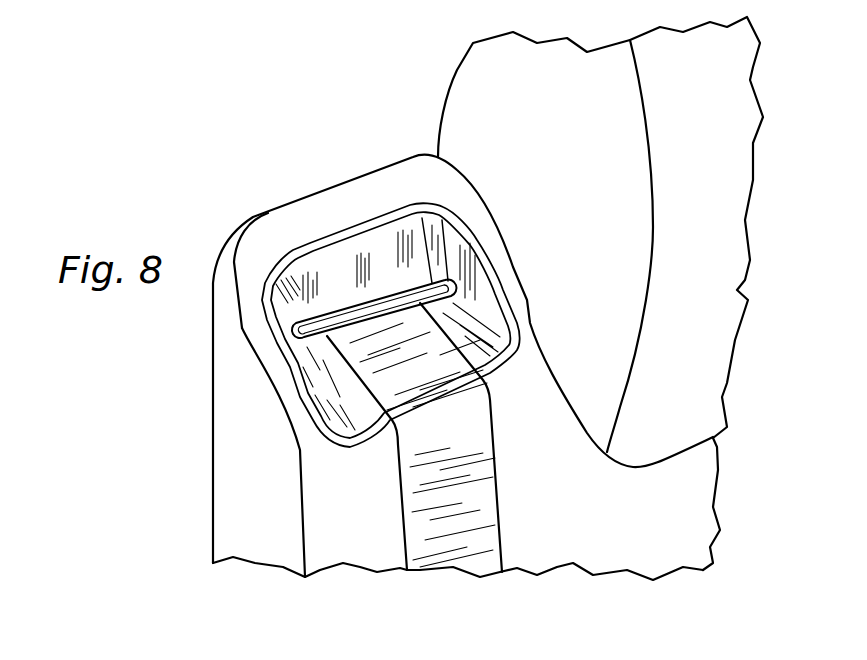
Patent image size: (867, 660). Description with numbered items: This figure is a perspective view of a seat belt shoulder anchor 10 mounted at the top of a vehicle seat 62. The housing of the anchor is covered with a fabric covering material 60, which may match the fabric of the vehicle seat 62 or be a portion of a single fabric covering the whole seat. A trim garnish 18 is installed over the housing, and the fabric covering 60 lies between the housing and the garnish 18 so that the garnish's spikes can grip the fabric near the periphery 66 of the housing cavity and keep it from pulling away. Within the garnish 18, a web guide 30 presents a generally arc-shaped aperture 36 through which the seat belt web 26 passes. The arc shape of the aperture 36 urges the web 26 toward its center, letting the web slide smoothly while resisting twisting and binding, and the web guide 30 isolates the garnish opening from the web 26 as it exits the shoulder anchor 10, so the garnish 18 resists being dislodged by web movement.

The seat belt shoulder anchor 10 is at (322, 158).
The trim garnish 18 is at (290, 380).
The web 26 is at (463, 502).
The web guide 30 is at (350, 310).
The aperture 36 is at (297, 332).
The fabric covering material 60 is at (353, 517).
The vehicle seat 62 is at (699, 271).
The periphery 66 is at (260, 325).